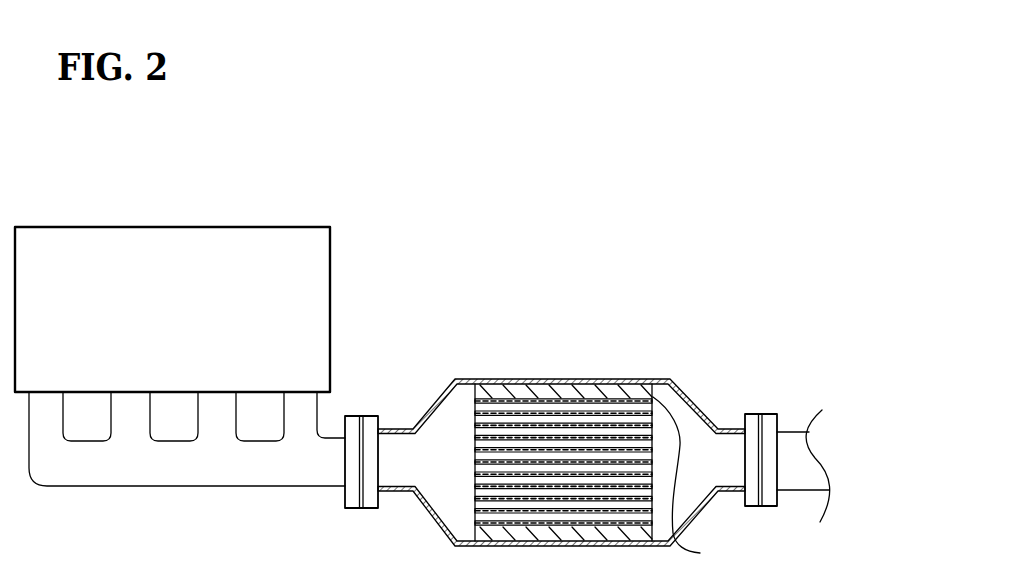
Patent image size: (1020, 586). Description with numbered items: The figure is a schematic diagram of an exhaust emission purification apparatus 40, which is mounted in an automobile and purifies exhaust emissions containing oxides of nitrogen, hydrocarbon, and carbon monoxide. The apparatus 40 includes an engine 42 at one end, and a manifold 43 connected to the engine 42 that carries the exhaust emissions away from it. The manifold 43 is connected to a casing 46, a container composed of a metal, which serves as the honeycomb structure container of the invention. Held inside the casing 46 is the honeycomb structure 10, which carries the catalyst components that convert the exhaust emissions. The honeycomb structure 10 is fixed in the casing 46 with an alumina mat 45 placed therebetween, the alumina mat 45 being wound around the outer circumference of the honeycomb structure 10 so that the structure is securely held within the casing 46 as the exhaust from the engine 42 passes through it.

The exhaust emission purification apparatus 40 is at (447, 178).
The engine 42 is at (330, 310).
The manifold 43 is at (238, 487).
The honeycomb structure 10 is at (473, 412).
The alumina mat 45 is at (700, 553).
The casing 46 is at (657, 379).